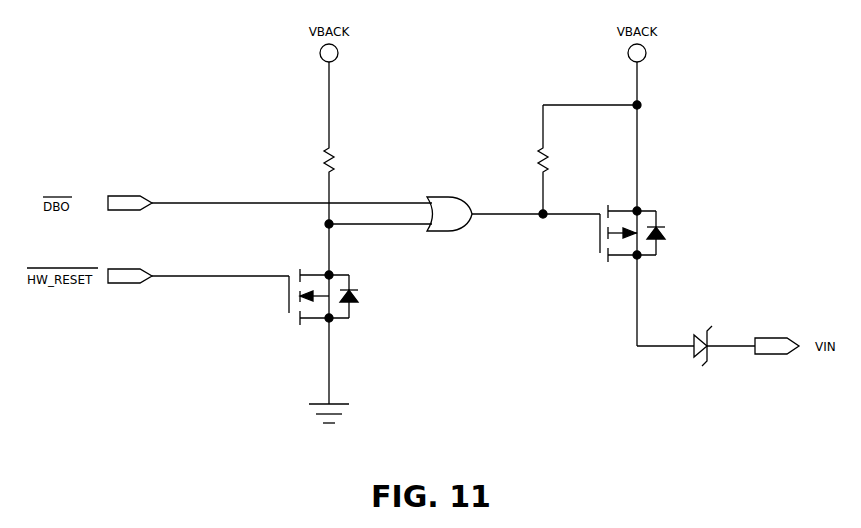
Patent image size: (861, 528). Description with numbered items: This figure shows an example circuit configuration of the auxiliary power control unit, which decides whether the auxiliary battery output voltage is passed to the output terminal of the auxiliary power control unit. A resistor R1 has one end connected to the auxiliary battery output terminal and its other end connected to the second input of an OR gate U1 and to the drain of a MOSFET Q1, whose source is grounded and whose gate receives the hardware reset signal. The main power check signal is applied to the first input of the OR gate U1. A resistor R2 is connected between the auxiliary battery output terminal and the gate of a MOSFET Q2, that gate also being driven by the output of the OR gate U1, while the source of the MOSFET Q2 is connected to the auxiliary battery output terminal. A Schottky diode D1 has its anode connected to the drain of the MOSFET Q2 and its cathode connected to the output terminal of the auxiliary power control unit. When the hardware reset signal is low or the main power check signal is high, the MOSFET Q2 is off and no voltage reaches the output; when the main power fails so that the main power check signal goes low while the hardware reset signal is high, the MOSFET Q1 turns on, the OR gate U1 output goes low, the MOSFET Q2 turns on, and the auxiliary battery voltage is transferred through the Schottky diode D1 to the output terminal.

The resistor R1 is at (315, 160).
The resistor R2 is at (529, 160).
The MOSFET Q1 is at (323, 286).
The MOSFET Q2 is at (646, 233).
The OR gate U1 is at (440, 204).
The Schottky diode D1 is at (702, 338).